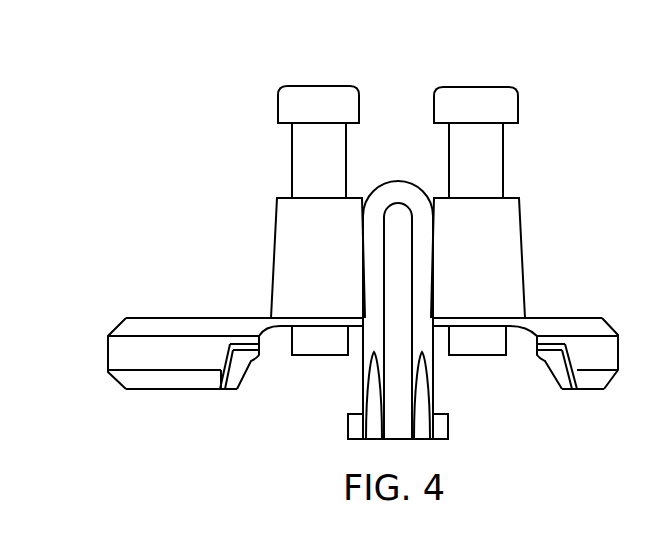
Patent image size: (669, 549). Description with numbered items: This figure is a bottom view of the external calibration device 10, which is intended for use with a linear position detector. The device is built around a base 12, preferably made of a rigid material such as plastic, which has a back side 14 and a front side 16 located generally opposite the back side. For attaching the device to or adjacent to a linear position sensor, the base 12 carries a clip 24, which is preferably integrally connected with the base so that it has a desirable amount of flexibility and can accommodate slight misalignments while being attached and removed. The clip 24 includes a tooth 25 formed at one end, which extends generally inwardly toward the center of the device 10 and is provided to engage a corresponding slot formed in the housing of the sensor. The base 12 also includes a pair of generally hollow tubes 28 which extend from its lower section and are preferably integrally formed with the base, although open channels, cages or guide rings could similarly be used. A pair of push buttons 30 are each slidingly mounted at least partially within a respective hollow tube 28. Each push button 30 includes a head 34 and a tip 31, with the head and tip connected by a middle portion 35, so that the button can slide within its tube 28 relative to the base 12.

The external calibration device 10 is at (347, 241).
The base 12 is at (108, 337).
The back side 14 is at (160, 389).
The front side 16 is at (148, 319).
The clip 24 is at (390, 182).
The tooth 25 is at (448, 420).
The hollow tube 28 is at (273, 262).
The push button 30 is at (397, 214).
The tip 31 is at (290, 352).
The head 34 is at (313, 86).
The middle portion 35 is at (292, 158).